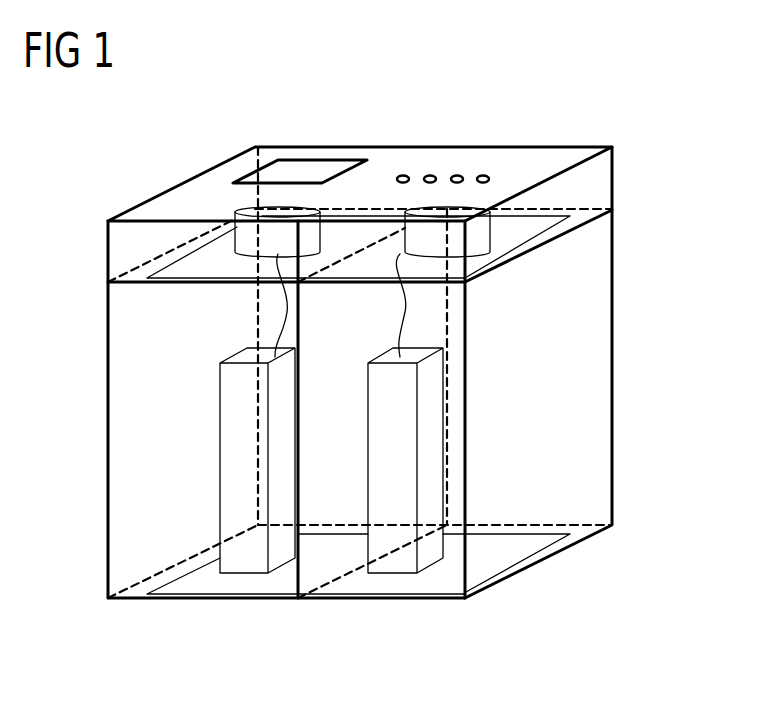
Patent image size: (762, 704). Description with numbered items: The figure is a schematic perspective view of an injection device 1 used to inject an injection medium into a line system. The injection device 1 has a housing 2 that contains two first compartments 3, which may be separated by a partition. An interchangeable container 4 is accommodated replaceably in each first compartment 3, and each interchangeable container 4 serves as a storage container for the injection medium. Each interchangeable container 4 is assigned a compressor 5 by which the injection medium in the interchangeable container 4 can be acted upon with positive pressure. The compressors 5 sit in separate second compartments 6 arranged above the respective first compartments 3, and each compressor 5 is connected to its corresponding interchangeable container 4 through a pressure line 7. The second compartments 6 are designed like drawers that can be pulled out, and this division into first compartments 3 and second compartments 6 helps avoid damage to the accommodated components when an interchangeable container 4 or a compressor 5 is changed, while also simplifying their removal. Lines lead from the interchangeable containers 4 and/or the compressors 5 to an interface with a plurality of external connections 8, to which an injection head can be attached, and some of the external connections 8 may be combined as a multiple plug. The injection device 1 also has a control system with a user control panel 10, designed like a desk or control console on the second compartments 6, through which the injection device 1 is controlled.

The injection device 1 is at (617, 130).
The housing 2 is at (613, 292).
The first compartment 3 is at (142, 388).
The interchangeable container 4 is at (247, 452).
The compressor 5 is at (247, 237).
The second compartment 6 is at (142, 252).
The pressure line 7 is at (285, 315).
The external connection 8 is at (401, 174).
The user control panel 10 is at (305, 170).